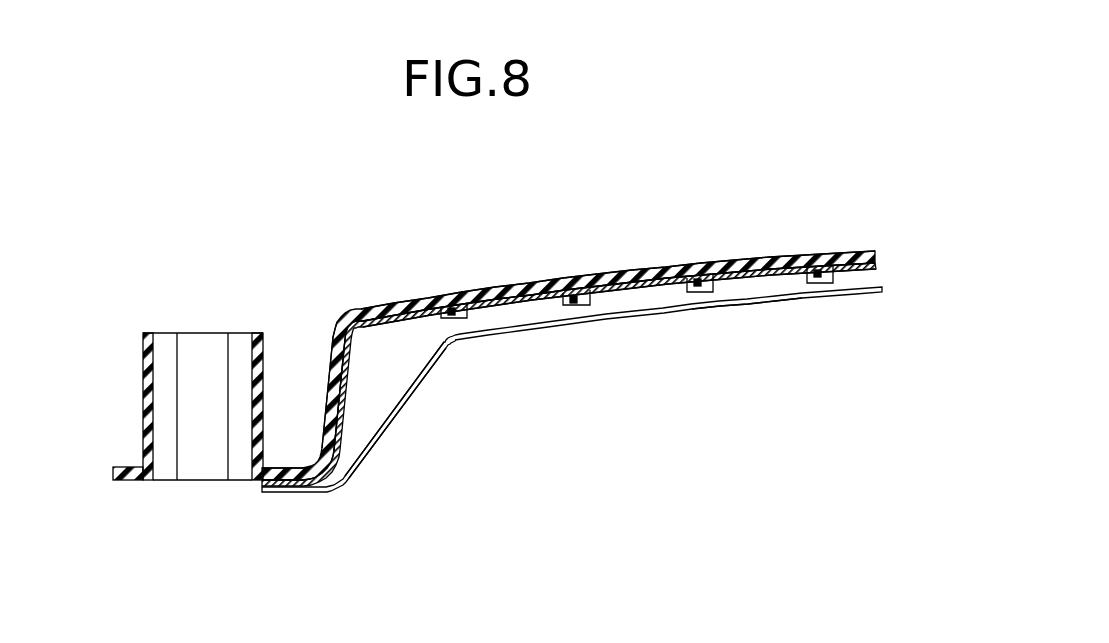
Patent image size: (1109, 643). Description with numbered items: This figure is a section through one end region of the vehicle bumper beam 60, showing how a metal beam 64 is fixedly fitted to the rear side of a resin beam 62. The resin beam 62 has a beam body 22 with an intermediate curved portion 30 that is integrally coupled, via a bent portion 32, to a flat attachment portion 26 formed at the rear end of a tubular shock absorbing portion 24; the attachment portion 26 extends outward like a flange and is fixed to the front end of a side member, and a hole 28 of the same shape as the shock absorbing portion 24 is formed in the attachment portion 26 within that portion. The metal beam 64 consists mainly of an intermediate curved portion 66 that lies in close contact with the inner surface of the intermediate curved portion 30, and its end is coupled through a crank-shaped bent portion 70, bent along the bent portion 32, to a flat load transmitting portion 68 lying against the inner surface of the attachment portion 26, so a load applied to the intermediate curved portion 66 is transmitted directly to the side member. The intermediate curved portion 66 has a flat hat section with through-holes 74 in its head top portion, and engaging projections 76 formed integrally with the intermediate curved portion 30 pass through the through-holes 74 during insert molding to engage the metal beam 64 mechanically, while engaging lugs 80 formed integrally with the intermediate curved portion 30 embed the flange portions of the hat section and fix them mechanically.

The vehicle bumper beam 60 is at (678, 146).
The beam body 22 is at (768, 221).
The resin beam 62 is at (262, 256).
The shock absorbing portion 24 is at (148, 397).
The attachment portion 26 is at (132, 476).
The hole 28 is at (248, 480).
The bent portion 32 is at (330, 380).
The load transmitting portion 68 is at (290, 493).
The intermediate curved portion 30 is at (598, 282).
The intermediate curved portion 66 is at (518, 303).
The through-hole 74 is at (455, 310).
The engaging projection 76 is at (455, 318).
The metal beam 64 is at (642, 314).
The bent portion 70 is at (347, 412).
The engaging lug 80 is at (745, 300).